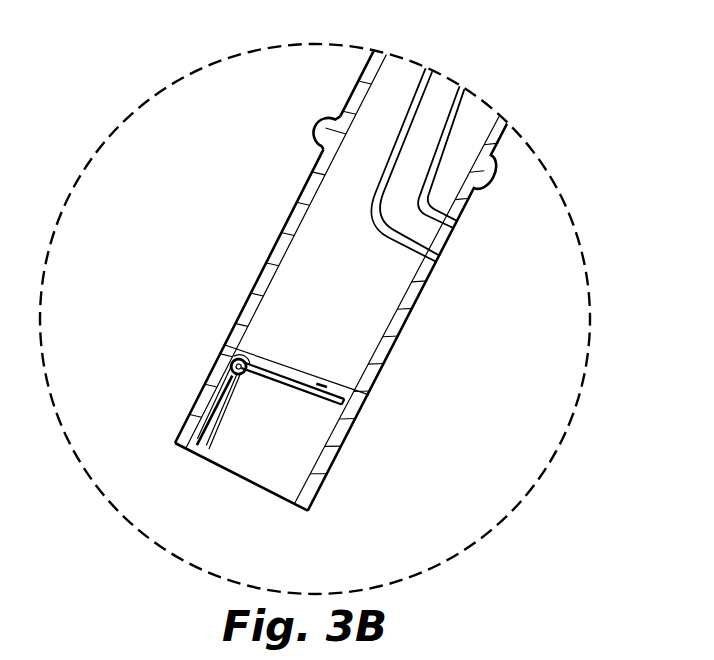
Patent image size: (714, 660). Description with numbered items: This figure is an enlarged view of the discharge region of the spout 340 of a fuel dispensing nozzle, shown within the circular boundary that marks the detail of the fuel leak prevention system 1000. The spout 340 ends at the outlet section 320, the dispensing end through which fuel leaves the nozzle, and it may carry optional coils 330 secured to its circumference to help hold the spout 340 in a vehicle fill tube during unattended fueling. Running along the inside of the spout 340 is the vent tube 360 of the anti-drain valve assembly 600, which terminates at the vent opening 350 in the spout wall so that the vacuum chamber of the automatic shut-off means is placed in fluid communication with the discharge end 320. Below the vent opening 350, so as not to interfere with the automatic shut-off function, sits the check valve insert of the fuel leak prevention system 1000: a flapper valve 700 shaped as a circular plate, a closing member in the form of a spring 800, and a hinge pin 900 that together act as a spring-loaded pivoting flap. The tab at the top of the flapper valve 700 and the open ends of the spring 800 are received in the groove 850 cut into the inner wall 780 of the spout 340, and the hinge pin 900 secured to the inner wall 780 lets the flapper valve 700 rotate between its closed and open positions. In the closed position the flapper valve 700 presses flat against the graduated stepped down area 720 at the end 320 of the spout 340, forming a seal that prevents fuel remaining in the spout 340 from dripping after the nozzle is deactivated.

The anti-drain valve assembly 600 is at (460, 60).
The fuel leak prevention system 1000 is at (530, 362).
The outlet section 320 is at (324, 507).
The coils 330 is at (304, 129).
The spout 340 is at (345, 240).
The vent opening 350 is at (443, 250).
The vent tube 360 is at (427, 137).
The flapper valve 700 is at (315, 393).
The graduated stepped down area 720 is at (340, 393).
The inner wall 780 is at (210, 452).
The spring 800 is at (238, 362).
The groove 850 is at (200, 447).
The hinge pin 900 is at (229, 363).